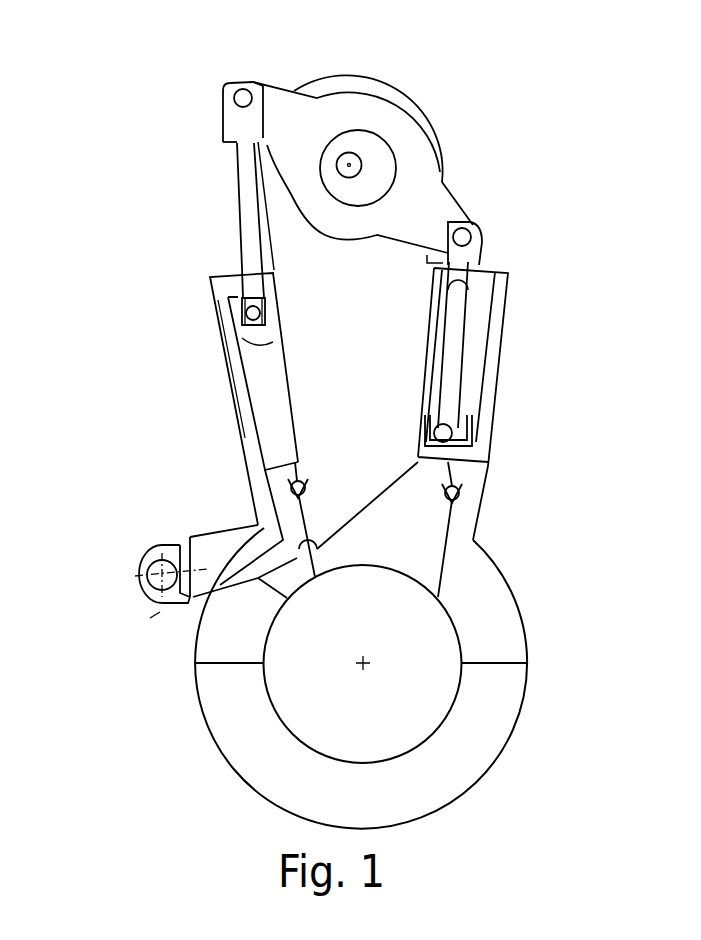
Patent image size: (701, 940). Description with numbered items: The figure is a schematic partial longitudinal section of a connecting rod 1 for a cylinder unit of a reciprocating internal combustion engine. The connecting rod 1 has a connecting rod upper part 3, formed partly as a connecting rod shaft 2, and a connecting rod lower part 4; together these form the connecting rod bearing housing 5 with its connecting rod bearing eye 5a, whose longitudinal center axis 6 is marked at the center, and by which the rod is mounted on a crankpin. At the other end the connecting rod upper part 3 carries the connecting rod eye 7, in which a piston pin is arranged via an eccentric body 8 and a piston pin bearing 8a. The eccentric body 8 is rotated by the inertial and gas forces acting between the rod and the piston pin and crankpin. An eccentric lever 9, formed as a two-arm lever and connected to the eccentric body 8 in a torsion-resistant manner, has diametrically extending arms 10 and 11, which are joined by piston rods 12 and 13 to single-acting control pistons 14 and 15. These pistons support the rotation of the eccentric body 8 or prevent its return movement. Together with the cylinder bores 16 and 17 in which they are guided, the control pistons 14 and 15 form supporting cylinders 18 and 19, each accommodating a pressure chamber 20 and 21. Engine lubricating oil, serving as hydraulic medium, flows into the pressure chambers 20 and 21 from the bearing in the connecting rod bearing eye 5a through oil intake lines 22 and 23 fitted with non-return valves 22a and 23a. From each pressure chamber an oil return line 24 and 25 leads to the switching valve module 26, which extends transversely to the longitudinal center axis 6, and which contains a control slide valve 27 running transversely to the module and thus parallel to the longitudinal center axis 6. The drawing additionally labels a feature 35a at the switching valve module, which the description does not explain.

The connecting rod 1 is at (253, 457).
The connecting rod shaft 2 is at (313, 350).
The connecting rod upper part 3 is at (474, 367).
The connecting rod lower part 4 is at (497, 735).
The connecting rod bearing housing 5 is at (464, 630).
The connecting rod bearing eye 5a is at (463, 680).
The longitudinal center axis 6 is at (362, 669).
The connecting rod eye 7 is at (400, 103).
The eccentric body 8 is at (381, 161).
The piston pin bearing 8a is at (344, 152).
The eccentric lever 9 is at (250, 142).
The arm 10 is at (273, 106).
The arm 11 is at (443, 207).
The piston rod 12 is at (247, 177).
The piston rod 13 is at (488, 330).
The control piston 14 is at (246, 341).
The control piston 15 is at (463, 455).
The cylinder bore 16 is at (275, 397).
The cylinder bore 17 is at (479, 408).
The supporting cylinder 18 is at (241, 450).
The supporting cylinder 19 is at (470, 437).
The pressure chamber 20 is at (257, 479).
The pressure chamber 21 is at (466, 496).
The oil intake line 22 is at (312, 526).
The non-return valve 22a is at (305, 483).
The oil intake line 23 is at (479, 568).
The non-return valve 23a is at (471, 520).
The oil return line 24 is at (246, 520).
The oil return line 25 is at (386, 500).
The switching valve module 26 is at (154, 617).
The control slide valve 27 is at (150, 596).
The mounting axis 35a is at (148, 580).